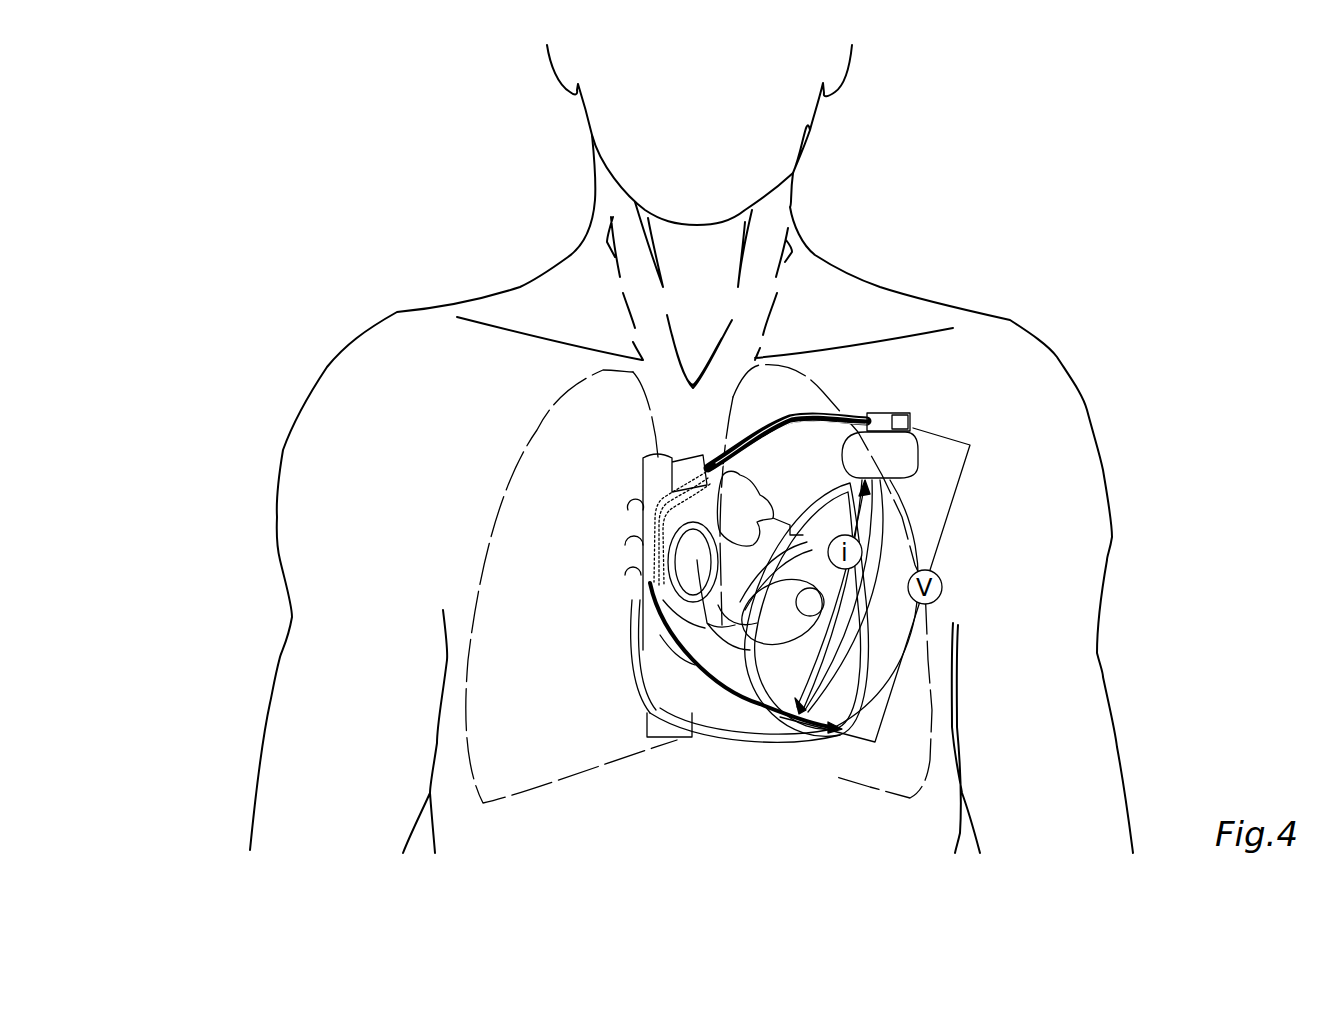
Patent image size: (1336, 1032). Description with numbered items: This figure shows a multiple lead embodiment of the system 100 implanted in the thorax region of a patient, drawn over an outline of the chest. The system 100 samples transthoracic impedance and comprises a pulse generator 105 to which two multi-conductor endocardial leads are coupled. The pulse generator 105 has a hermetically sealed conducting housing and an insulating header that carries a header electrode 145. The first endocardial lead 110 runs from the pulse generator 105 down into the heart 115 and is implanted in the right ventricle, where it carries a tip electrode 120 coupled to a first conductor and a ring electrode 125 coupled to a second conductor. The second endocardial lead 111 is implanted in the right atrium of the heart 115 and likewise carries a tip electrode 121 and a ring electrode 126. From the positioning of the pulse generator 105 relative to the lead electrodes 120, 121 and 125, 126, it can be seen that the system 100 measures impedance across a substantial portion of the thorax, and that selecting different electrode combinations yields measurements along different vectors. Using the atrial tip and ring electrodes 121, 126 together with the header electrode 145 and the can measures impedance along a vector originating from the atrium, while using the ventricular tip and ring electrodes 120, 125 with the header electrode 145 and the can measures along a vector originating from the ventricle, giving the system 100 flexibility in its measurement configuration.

The system 100 is at (953, 403).
The pulse generator 105 is at (905, 465).
The fourth electrode 145 is at (900, 417).
The endocardial lead 110 is at (779, 414).
The endocardial lead 111 is at (806, 427).
The heart 115 is at (737, 737).
The tip electrode 120 is at (807, 732).
The ring electrode 125 is at (797, 705).
The tip electrode 121 is at (677, 640).
The ring electrode 126 is at (677, 605).